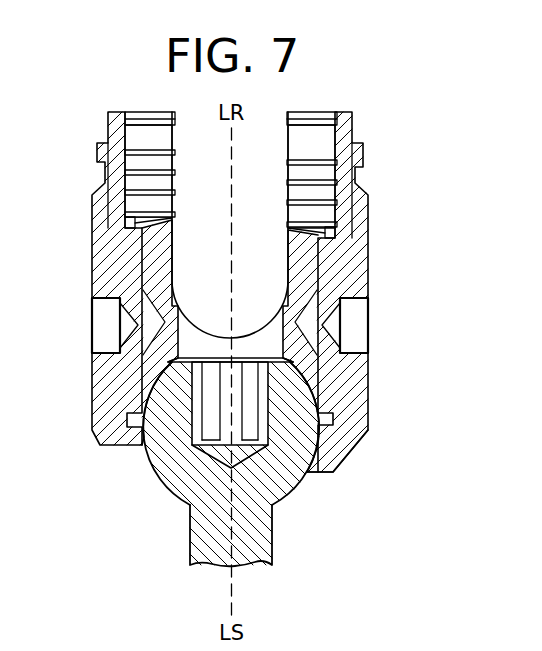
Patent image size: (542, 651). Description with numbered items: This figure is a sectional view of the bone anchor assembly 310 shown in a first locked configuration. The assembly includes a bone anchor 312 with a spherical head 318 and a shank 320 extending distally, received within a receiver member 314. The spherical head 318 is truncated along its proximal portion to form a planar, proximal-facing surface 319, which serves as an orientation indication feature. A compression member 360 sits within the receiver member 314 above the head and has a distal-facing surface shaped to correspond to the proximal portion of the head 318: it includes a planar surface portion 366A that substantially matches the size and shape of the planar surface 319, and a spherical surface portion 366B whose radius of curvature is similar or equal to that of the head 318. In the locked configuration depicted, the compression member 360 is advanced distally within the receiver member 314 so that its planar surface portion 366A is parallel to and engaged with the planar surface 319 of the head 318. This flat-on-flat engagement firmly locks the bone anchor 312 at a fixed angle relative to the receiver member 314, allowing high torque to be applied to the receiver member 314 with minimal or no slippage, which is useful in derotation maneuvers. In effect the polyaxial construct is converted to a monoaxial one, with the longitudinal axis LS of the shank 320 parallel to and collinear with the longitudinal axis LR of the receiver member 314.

The bone anchor assembly 310 is at (75, 128).
The bone anchor 312 is at (165, 520).
The receiver member 314 is at (92, 270).
The spherical head 318 is at (287, 488).
The planar surface 319 is at (312, 446).
The shank 320 is at (254, 552).
The compression member 360 is at (297, 247).
The planar surface portion 366A is at (278, 360).
The spherical surface portion 366B is at (291, 364).